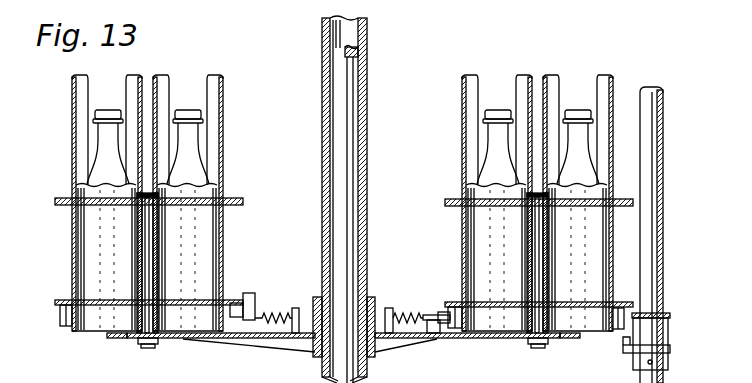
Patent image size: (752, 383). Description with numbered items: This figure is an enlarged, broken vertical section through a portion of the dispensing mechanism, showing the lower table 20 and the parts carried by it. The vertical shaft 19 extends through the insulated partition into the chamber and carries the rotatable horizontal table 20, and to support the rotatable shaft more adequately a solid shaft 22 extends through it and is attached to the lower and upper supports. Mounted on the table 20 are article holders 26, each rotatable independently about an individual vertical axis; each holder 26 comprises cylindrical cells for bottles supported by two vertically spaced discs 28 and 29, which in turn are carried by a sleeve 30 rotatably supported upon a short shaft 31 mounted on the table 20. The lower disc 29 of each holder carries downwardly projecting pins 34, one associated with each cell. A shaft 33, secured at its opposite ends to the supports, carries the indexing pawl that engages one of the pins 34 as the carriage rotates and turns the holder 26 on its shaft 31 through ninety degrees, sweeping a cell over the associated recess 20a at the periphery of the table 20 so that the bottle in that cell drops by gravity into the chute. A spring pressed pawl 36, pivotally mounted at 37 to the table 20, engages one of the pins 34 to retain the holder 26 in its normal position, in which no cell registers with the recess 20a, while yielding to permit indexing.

The vertical shaft 19 is at (367, 154).
The solid shaft 22 is at (351, 196).
The article holder 26 is at (240, 247).
The upper disc 28 is at (618, 206).
The lower disc 29 is at (620, 302).
The sleeve 30 is at (137, 245).
The short shaft 31 is at (147, 269).
The shaft 33 is at (664, 379).
The pin 34 is at (61, 318).
The spring pressed pawl 36 is at (426, 314).
The pivot 37 is at (430, 328).
The table 20 is at (462, 338).
The recess 20a is at (108, 339).